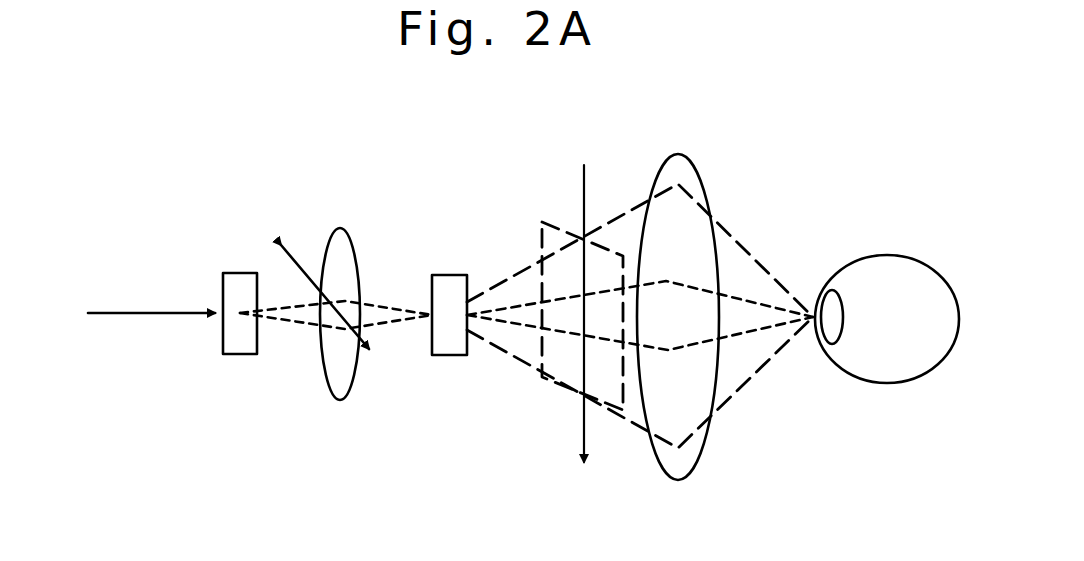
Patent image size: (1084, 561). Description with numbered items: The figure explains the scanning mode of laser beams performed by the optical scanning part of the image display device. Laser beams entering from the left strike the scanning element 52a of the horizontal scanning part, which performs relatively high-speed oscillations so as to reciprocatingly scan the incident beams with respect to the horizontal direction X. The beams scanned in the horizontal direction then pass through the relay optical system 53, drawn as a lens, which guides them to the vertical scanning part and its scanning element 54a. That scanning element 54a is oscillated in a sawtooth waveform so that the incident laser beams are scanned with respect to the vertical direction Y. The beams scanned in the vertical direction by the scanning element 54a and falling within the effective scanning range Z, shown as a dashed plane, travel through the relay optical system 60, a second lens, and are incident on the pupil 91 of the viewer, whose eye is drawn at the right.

The scanning element 52a is at (222, 284).
The relay optical system 53 is at (312, 386).
The scanning element 54a is at (450, 274).
The relay optical system 60 is at (730, 203).
The pupil 91 is at (837, 307).
The horizontal direction X is at (296, 262).
The vertical direction Y is at (578, 225).
The effective scanning range Z is at (535, 221).